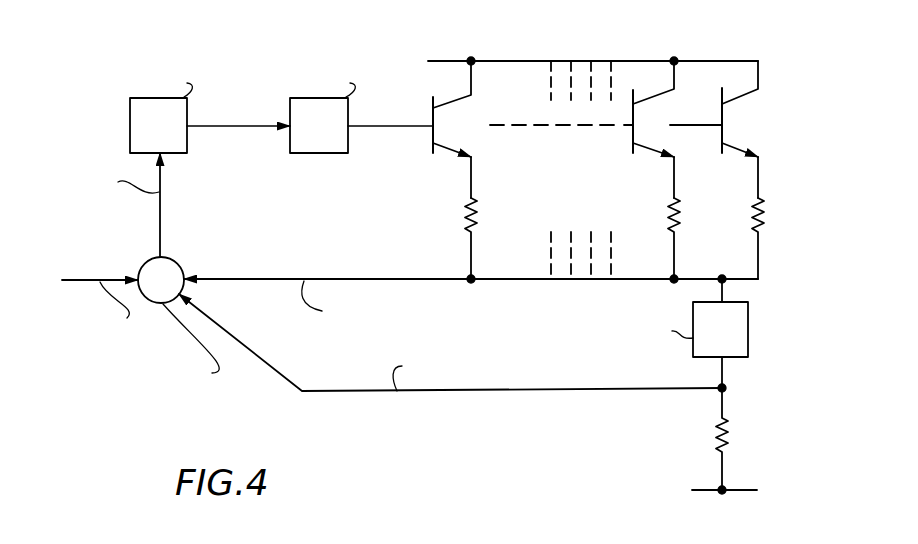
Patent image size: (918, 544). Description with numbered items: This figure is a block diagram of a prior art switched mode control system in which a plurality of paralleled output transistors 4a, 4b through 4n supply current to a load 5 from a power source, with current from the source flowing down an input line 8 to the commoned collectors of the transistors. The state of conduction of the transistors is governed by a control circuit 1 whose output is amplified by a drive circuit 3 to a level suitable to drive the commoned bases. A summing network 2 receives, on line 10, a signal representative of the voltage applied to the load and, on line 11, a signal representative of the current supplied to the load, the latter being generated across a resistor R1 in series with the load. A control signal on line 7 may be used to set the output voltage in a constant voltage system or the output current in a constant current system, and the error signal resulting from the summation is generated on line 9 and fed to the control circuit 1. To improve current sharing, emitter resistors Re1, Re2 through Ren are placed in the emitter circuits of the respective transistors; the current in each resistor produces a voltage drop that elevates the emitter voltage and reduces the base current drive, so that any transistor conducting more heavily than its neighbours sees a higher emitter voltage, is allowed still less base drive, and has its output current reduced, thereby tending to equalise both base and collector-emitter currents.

The control circuit 1 is at (161, 101).
The summing network 2 is at (178, 333).
The drive circuit 3 is at (310, 101).
The output transistor 4a is at (457, 127).
The output transistor 4b is at (651, 127).
The output transistor 4n is at (714, 129).
The load 5 is at (690, 333).
The control signal line 7 is at (92, 280).
The input line 8 is at (447, 59).
The error signal line 9 is at (159, 210).
The applied voltage signal line 10 is at (316, 278).
The supplied current signal line 11 is at (366, 391).
The emitter resistor Re1 is at (498, 240).
The emitter resistor Re2 is at (699, 240).
The emitter resistor Ren is at (783, 238).
The resistor R1 is at (718, 439).